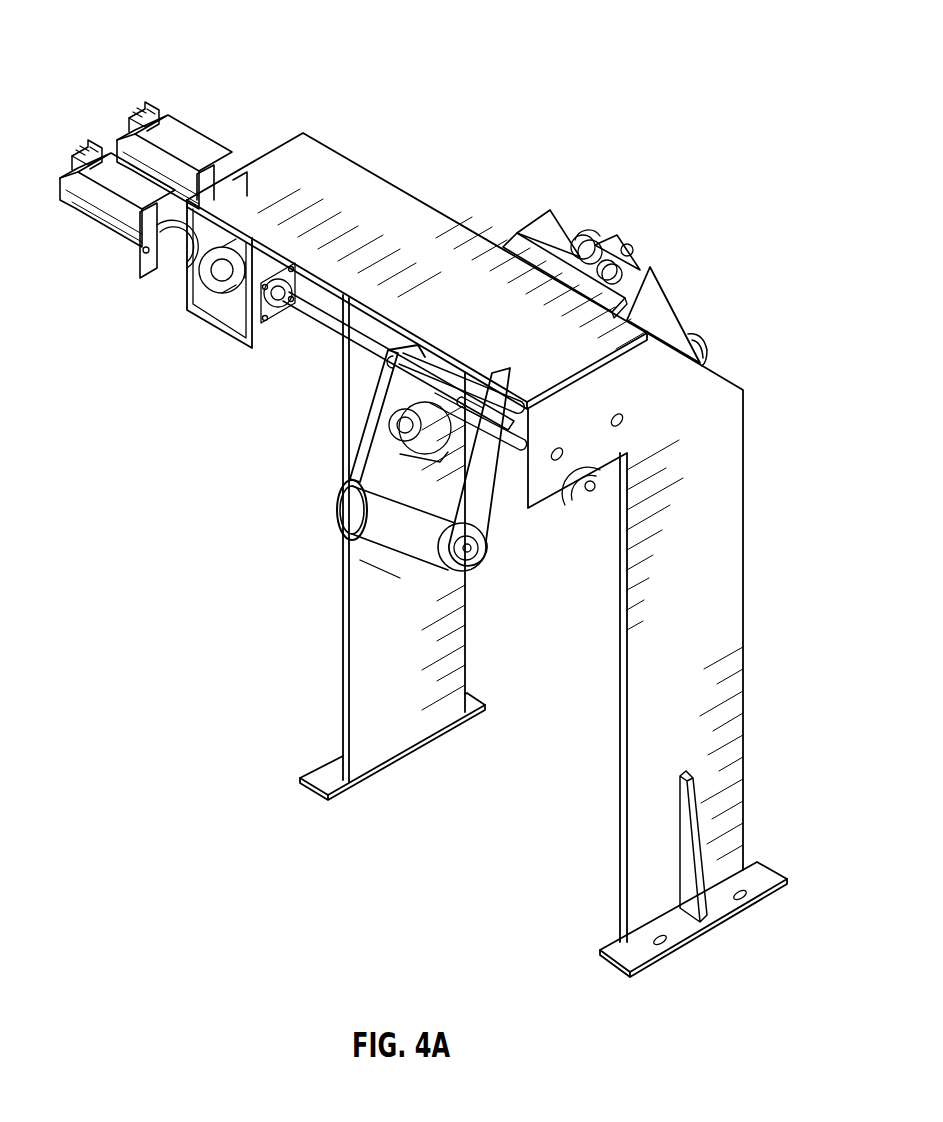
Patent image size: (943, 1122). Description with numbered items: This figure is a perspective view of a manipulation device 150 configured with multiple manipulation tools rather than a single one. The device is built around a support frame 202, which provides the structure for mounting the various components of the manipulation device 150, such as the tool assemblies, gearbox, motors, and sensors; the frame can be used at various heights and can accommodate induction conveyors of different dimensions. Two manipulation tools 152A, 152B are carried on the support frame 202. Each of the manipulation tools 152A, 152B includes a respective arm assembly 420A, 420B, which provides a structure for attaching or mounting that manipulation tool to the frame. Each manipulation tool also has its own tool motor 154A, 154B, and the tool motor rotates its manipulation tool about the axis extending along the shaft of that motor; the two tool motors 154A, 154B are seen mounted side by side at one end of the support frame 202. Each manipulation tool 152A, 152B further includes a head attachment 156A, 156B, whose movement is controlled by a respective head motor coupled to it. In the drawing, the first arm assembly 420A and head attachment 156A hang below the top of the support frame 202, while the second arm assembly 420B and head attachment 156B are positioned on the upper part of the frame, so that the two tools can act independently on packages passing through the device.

The manipulation device 150 is at (131, 46).
The first manipulation tool 152A is at (313, 396).
The second manipulation tool 152B is at (714, 364).
The first tool motor 154A is at (110, 207).
The second tool motor 154B is at (184, 148).
The first head attachment 156A is at (392, 530).
The second head attachment 156B is at (700, 343).
The support frame 202 is at (728, 580).
The first arm assembly 420A is at (492, 515).
The second arm assembly 420B is at (551, 250).